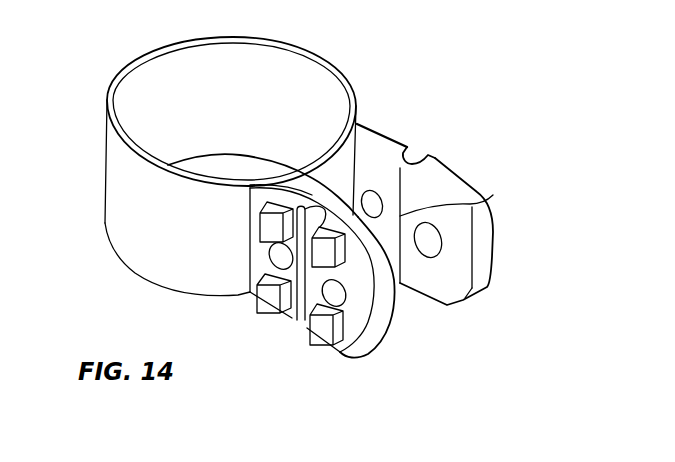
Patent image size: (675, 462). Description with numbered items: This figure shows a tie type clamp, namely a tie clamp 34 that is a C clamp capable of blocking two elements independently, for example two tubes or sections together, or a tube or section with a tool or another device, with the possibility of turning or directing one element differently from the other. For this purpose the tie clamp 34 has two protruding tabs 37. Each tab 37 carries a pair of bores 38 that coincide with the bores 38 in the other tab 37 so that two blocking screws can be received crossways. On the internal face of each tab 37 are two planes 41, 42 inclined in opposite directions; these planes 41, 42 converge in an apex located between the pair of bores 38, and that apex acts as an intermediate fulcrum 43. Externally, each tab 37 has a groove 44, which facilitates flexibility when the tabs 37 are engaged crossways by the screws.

The tie clamp 34 is at (366, 83).
The protruding tab 37 is at (494, 232).
The bore 38 is at (273, 252).
The inclined plane 41 is at (462, 258).
The inclined plane 42 is at (390, 189).
The intermediate fulcrum 43 is at (462, 201).
The groove 44 is at (420, 157).